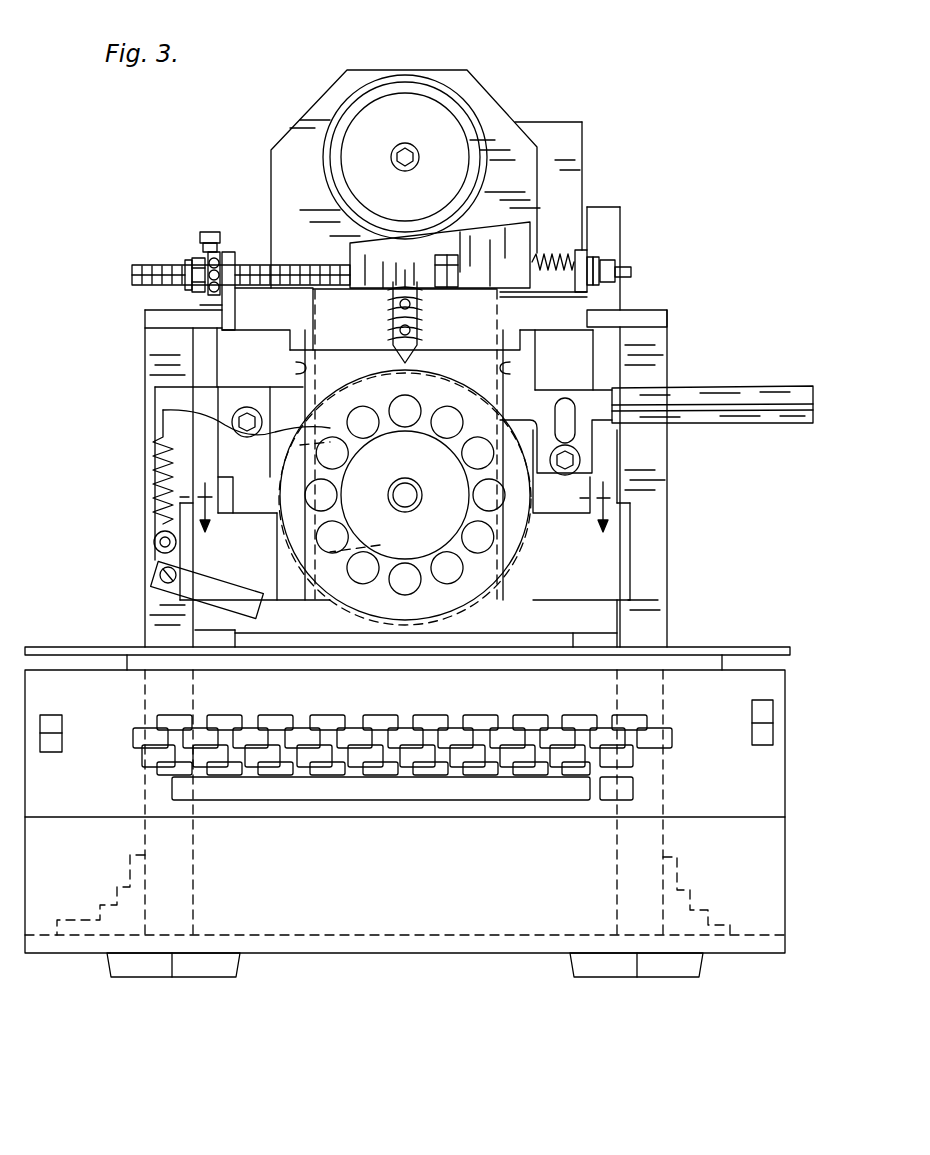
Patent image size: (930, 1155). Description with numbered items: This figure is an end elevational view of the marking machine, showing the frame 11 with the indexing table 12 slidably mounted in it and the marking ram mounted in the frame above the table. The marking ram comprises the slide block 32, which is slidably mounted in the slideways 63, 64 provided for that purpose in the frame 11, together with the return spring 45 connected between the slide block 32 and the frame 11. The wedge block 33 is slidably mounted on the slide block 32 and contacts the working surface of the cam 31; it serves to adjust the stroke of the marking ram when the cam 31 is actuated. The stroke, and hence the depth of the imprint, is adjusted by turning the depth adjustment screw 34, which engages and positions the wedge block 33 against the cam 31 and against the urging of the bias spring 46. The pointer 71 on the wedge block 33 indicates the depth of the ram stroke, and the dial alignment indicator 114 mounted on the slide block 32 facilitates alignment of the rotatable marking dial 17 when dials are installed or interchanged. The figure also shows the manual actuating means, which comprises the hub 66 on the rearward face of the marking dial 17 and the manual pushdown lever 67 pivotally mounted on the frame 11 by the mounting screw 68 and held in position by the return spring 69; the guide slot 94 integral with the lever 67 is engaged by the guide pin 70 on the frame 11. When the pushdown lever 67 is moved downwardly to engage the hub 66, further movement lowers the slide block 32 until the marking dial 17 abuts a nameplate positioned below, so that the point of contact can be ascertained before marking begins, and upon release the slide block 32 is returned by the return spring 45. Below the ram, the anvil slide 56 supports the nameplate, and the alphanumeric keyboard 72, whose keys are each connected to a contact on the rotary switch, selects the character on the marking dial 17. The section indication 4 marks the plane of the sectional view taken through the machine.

The cam 31 is at (415, 74).
The frame 11 is at (290, 145).
The depth adjustment screw 34 is at (268, 268).
The wedge block 33 is at (355, 250).
The pointer 71 is at (458, 270).
The bias spring 46 is at (556, 262).
The slide block 32 is at (322, 298).
The return spring 45 is at (385, 318).
The dial alignment indicator 114 is at (415, 356).
The slideway 64 is at (296, 368).
The slideway 63 is at (510, 368).
The manual pushdown lever 67 is at (735, 400).
The return spring 69 is at (160, 482).
The mounting screw 68 is at (258, 440).
The section line 4- 4 is at (395, 524).
The hub 66 is at (442, 468).
The guide slot 94 is at (570, 432).
The guide pin 70 is at (580, 463).
The marking dial 17 is at (458, 596).
The indexing table 12 is at (88, 648).
The anvil slide 56 is at (716, 660).
The alphanumeric keyboard 72 is at (634, 716).